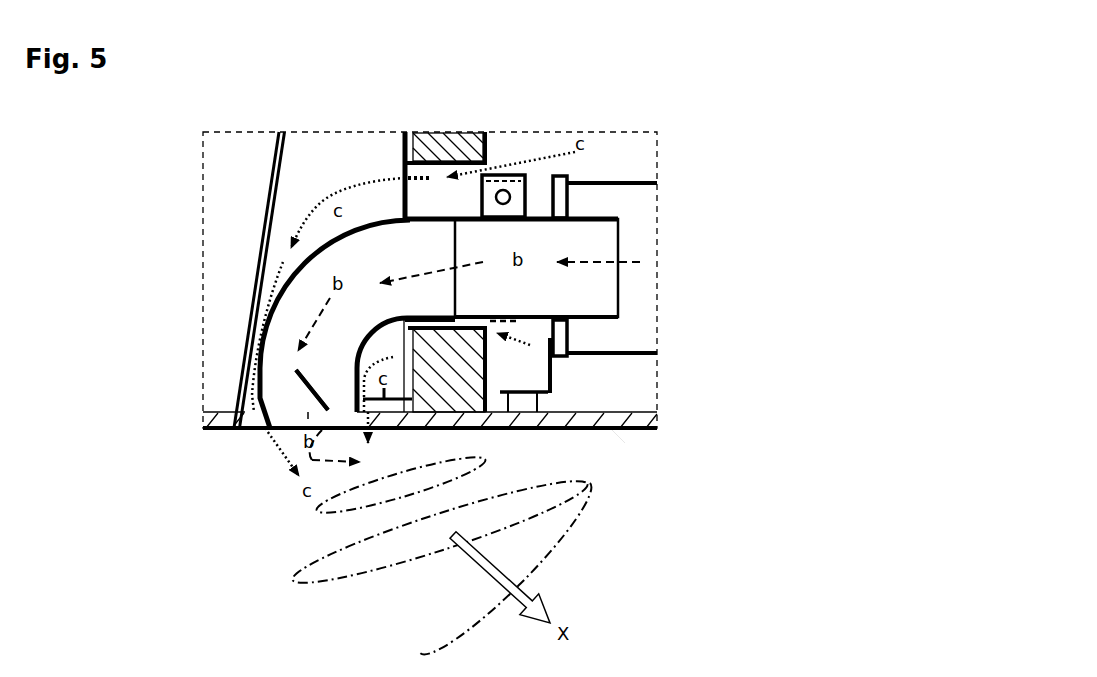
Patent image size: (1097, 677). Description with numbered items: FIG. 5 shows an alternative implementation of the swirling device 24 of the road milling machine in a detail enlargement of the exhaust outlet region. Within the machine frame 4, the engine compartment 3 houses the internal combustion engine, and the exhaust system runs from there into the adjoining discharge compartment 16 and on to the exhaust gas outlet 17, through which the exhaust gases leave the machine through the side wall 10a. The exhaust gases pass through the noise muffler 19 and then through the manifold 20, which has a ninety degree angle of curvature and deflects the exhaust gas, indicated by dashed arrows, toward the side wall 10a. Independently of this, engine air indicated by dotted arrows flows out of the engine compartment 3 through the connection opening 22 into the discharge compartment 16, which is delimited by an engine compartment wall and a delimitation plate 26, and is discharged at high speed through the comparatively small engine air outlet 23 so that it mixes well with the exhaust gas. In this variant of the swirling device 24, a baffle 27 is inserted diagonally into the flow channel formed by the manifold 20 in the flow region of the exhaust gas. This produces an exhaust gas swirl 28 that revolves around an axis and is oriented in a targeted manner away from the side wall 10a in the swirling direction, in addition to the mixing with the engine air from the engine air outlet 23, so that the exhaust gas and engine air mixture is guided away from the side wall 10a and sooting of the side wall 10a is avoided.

The engine compartment 3 is at (636, 155).
The machine frame 4 is at (657, 430).
The side wall 10a is at (612, 430).
The discharge compartment 16 is at (342, 180).
The exhaust gas outlet 17 is at (295, 428).
The noise muffler 19 is at (637, 203).
The manifold 20 is at (81, 673).
The connection opening 22 is at (436, 170).
The engine air outlet 23 is at (245, 428).
The swirling device 24 is at (297, 378).
The delimitation plate 26 is at (262, 210).
The baffle 27 is at (303, 390).
The exhaust gas swirl 28 is at (420, 653).